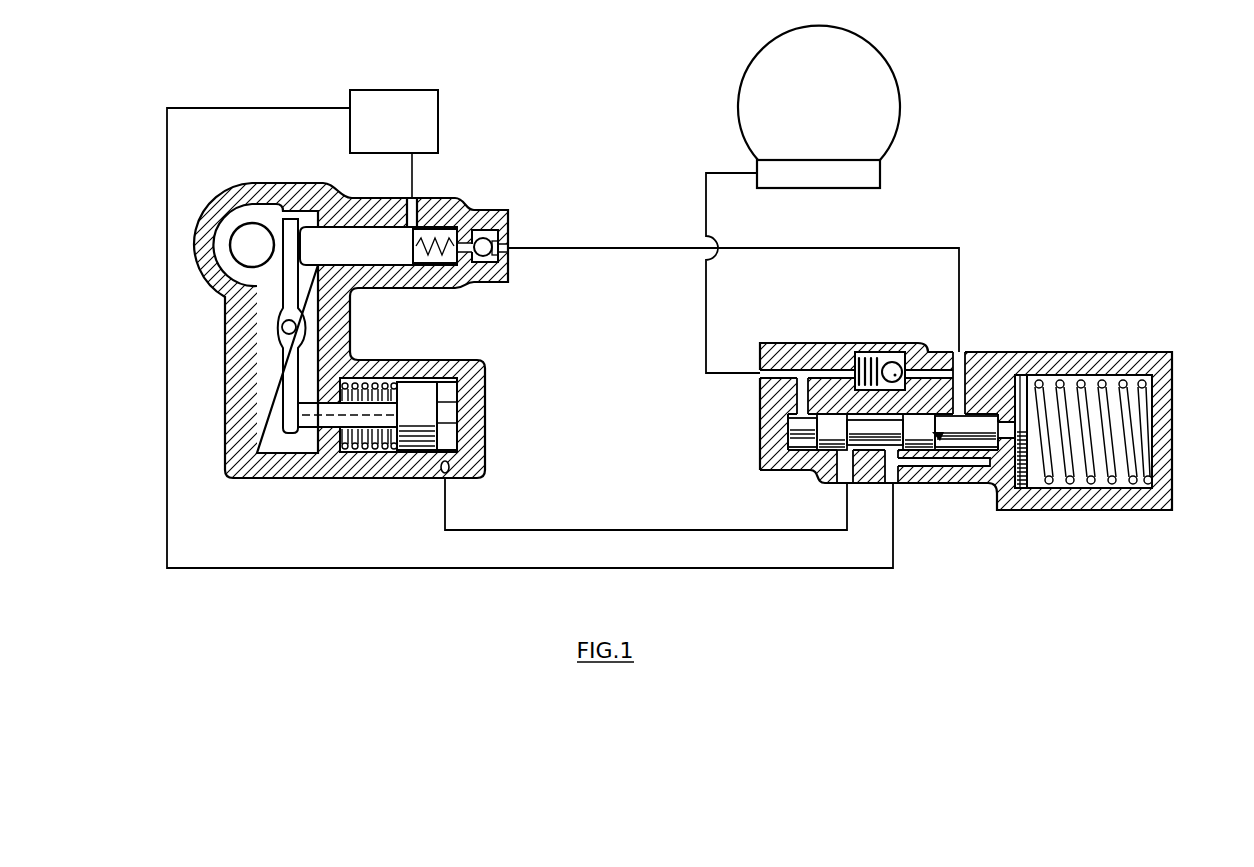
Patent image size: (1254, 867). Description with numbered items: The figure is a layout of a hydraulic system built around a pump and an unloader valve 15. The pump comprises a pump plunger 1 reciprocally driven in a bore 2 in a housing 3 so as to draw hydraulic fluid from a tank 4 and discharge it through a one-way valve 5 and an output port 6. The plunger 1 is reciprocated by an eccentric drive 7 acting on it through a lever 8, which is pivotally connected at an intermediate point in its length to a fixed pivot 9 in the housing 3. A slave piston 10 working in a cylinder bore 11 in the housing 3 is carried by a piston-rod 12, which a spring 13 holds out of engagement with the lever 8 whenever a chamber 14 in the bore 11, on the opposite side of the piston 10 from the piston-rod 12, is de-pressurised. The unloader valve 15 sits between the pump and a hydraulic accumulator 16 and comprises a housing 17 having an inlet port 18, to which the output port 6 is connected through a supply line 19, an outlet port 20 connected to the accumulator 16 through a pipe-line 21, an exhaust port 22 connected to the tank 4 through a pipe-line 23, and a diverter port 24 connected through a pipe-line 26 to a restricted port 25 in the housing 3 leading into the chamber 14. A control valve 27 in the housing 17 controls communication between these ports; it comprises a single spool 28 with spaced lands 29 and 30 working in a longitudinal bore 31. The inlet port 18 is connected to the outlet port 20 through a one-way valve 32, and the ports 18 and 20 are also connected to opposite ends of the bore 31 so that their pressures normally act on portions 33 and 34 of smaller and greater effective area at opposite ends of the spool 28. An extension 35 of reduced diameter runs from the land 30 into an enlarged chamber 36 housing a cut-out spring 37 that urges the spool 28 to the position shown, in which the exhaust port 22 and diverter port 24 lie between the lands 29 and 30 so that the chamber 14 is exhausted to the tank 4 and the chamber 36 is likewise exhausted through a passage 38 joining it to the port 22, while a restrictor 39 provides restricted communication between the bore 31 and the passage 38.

The pump plunger 1 is at (328, 237).
The bore 2 is at (357, 226).
The housing 3 is at (257, 468).
The tank 4 is at (438, 122).
The one-way valve 5 is at (477, 230).
The output port 6 is at (497, 235).
The eccentric drive 7 is at (245, 247).
The lever 8 is at (288, 353).
The fixed pivot 9 is at (282, 327).
The slave piston 10 is at (417, 390).
The cylinder bore 11 is at (373, 452).
The piston-rod 12 is at (313, 412).
The spring 13 is at (372, 390).
The chamber 14 is at (447, 390).
The unloader valve 15 is at (1176, 416).
The hydraulic accumulator 16 is at (887, 102).
The housing 17 is at (980, 367).
The inlet port 18 is at (957, 353).
The supply line 19 is at (587, 248).
The outlet port 20 is at (778, 372).
The pipe-line 21 is at (706, 318).
The exhaust port 22 is at (870, 472).
The pipe-line 23 is at (732, 568).
The diverter port 24 is at (843, 464).
The restricted port 25 is at (447, 471).
The pipe-line 26 is at (622, 530).
The control valve 27 is at (956, 450).
The spool 28 is at (863, 432).
The land 29 is at (790, 440).
The land 30 is at (915, 450).
The longitudinal bore 31 is at (978, 410).
The one-way valve 32 is at (889, 366).
The portion 33 is at (941, 432).
The portion 34 is at (810, 417).
The extension 35 is at (999, 427).
The enlarged chamber 36 is at (1088, 378).
The cut-out spring 37 is at (1093, 484).
The passage 38 is at (982, 466).
The restrictor 39 is at (941, 436).